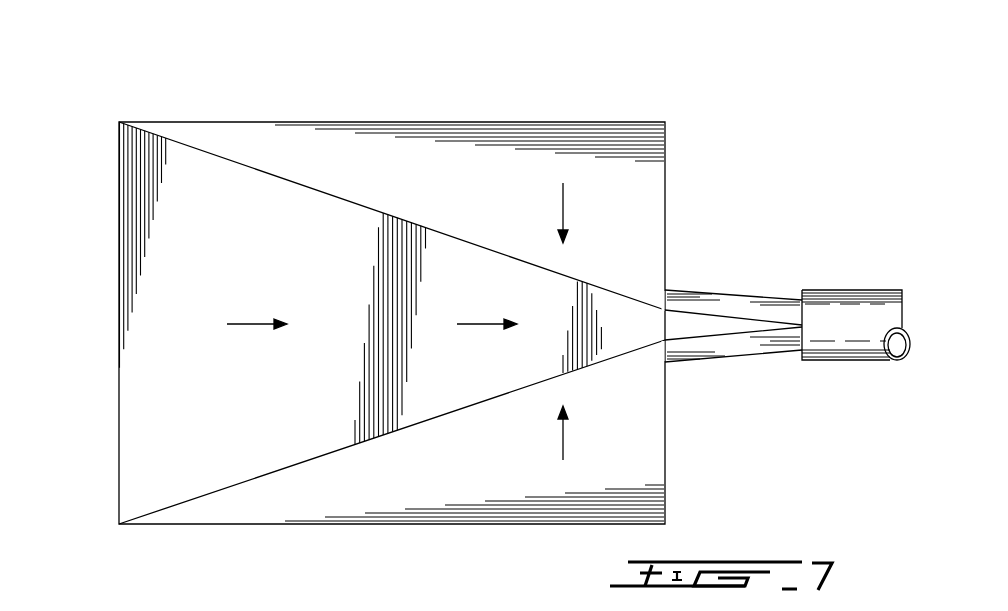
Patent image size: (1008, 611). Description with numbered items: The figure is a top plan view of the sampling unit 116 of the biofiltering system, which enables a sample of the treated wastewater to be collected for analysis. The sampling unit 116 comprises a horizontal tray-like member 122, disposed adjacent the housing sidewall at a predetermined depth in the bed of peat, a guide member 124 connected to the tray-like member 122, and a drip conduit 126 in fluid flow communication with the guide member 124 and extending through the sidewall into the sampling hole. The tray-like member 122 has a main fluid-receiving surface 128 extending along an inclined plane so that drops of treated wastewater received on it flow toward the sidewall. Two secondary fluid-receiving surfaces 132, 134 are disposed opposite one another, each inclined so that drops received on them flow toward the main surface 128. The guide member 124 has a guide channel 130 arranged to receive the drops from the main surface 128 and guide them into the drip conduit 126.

The sampling unit 116 is at (218, 102).
The tray-like member 122 is at (163, 300).
The guide member 124 is at (747, 308).
The drip conduit 126 is at (836, 302).
The main fluid-receiving surface 128 is at (286, 399).
The guide channel 130 is at (722, 332).
The secondary fluid-receiving surface 132 is at (512, 206).
The secondary fluid-receiving surface 134 is at (512, 465).